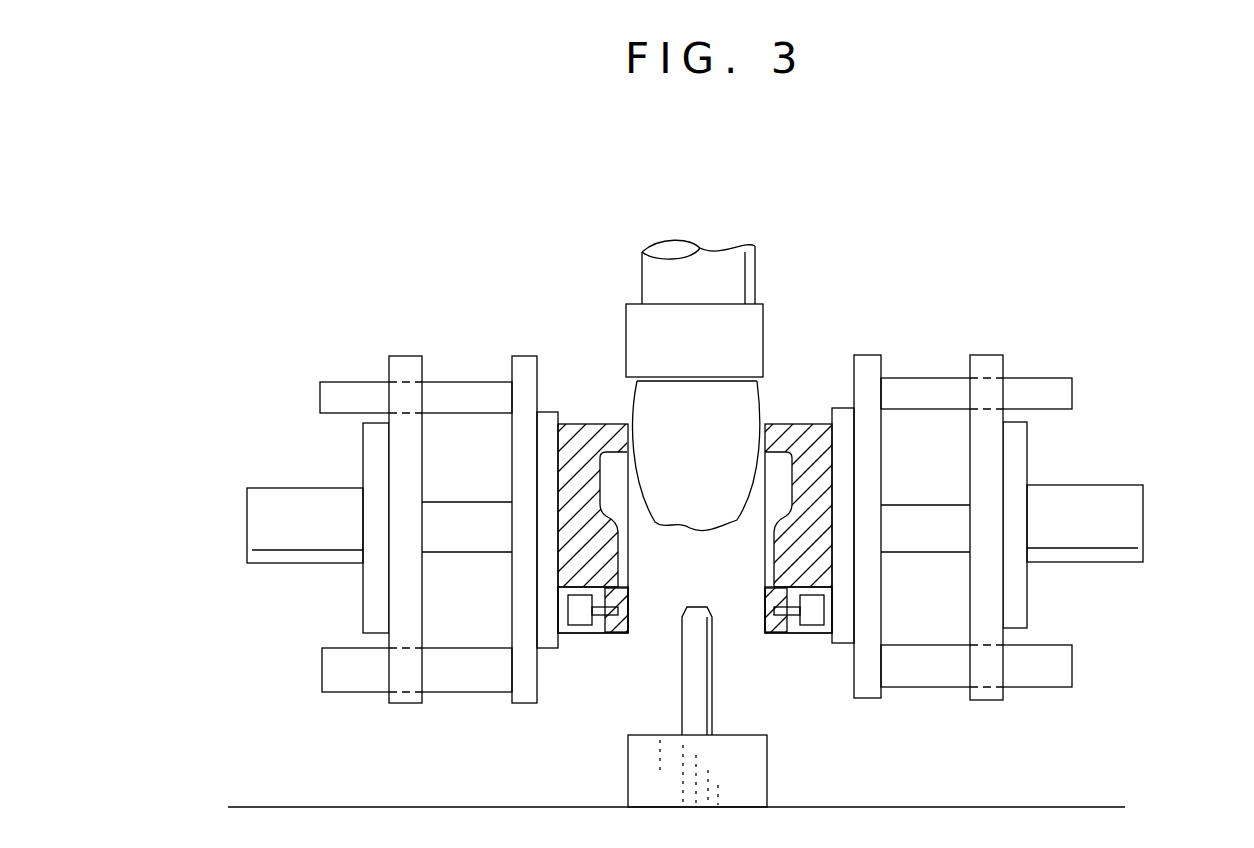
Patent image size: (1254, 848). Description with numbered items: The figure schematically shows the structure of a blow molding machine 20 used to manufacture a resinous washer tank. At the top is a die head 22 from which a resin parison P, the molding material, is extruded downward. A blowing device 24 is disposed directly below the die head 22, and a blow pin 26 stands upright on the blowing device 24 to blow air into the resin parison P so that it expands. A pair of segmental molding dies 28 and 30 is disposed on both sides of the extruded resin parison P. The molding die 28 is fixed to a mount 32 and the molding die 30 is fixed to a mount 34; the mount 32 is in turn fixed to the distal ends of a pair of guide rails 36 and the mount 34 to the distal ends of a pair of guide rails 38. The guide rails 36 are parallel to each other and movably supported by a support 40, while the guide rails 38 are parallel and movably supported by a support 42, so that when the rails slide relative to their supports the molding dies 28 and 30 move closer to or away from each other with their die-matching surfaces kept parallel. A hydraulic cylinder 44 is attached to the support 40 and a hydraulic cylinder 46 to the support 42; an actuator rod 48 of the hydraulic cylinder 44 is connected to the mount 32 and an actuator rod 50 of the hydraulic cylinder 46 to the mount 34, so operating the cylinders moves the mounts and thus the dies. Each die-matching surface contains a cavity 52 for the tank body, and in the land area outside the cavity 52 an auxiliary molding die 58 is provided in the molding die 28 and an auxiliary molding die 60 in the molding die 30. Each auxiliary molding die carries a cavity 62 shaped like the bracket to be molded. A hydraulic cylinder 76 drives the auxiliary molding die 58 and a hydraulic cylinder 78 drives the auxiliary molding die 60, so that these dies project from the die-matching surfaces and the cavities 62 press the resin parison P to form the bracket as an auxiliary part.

The blow molding machine 20 is at (846, 282).
The die head 22 is at (626, 327).
The blowing device 24 is at (628, 770).
The blow pin 26 is at (712, 698).
The molding die 28 is at (575, 424).
The molding die 30 is at (797, 423).
The mount 32 is at (505, 356).
The mount 34 is at (866, 355).
The guide rails 36 is at (341, 382).
The guide rails 38 is at (1048, 378).
The support 40 is at (405, 356).
The support 42 is at (982, 355).
The hydraulic cylinder 44 is at (258, 523).
The hydraulic cylinder 46 is at (1150, 520).
The actuator rod 48 is at (467, 500).
The actuator rod 50 is at (922, 505).
The cavity 52 is at (612, 513).
The auxiliary molding die 58 is at (606, 633).
The auxiliary molding die 60 is at (785, 633).
The cavity for molding an auxiliary part 62 is at (620, 615).
The hydraulic cylinder 76 is at (572, 633).
The hydraulic cylinder 78 is at (815, 637).
The resin parison P is at (757, 398).